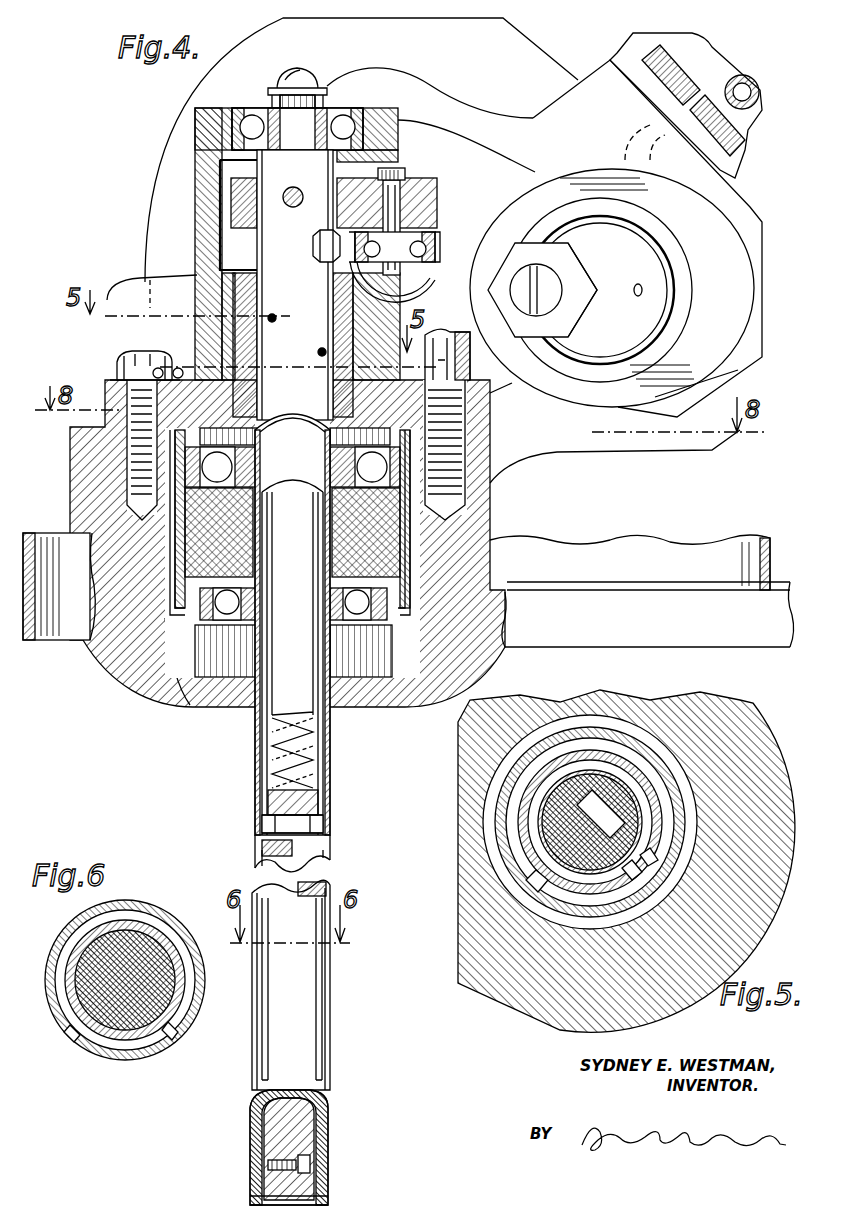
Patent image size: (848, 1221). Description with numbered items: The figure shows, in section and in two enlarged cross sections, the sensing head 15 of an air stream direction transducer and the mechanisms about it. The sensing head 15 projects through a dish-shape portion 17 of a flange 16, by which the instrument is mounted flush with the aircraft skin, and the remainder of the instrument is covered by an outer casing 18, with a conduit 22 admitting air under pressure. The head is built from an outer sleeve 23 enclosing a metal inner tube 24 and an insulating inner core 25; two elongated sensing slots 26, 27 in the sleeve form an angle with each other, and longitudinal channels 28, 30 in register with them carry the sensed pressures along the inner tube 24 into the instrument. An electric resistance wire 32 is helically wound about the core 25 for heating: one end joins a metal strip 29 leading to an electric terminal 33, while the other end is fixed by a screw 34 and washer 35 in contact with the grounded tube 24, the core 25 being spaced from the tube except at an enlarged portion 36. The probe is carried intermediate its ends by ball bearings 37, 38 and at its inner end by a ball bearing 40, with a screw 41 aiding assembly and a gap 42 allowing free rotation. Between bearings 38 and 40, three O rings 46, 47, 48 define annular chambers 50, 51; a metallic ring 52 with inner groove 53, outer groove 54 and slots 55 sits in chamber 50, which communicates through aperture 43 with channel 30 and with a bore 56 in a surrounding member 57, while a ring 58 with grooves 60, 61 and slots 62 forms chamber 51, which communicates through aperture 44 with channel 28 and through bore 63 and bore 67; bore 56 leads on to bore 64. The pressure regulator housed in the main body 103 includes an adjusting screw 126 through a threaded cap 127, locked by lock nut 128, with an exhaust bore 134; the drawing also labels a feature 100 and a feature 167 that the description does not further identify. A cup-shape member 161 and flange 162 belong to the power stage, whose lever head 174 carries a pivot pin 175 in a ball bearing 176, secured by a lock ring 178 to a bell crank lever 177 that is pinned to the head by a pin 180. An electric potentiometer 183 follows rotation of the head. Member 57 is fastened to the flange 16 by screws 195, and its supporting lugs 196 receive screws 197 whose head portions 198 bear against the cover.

In FIG. 4, the sensing head 15 is at (233, 762).
In FIG. 4, the flange 16 is at (585, 597).
In FIG. 4, the dish-shape portion 17 is at (400, 705).
In FIG. 4, the outer casing 18 is at (688, 556).
In FIG. 4, the conduit 22 is at (738, 78).
In FIG. 4, the outer sleeve 23 is at (330, 976).
In FIG. 5, the outer sleeve 23 is at (625, 762).
In FIG. 6, the outer sleeve 23 is at (175, 940).
In FIG. 4, the inner tube 24 is at (330, 1098).
In FIG. 5, the inner tube 24 is at (530, 838).
In FIG. 6, the inner tube 24 is at (110, 1055).
In FIG. 4, the inner core 25 is at (314, 1134).
In FIG. 5, the inner core 25 is at (540, 826).
In FIG. 6, the inner core 25 is at (135, 936).
In FIG. 4, the sensing slot 26 is at (262, 1048).
In FIG. 6, the sensing slot 26 is at (75, 1042).
In FIG. 4, the sensing slot 27 is at (322, 1022).
In FIG. 6, the sensing slot 27 is at (178, 1040).
In FIG. 4, the longitudinal channel 28 is at (270, 464).
In FIG. 5, the longitudinal channel 28 is at (545, 856).
In FIG. 6, the longitudinal channel 28 is at (66, 1036).
In FIG. 4, the metal strip 29 is at (318, 664).
In FIG. 5, the metal strip 29 is at (588, 910).
In FIG. 4, the longitudinal channel 30 is at (312, 436).
In FIG. 5, the longitudinal channel 30 is at (650, 872).
In FIG. 6, the longitudinal channel 30 is at (185, 1028).
In FIG. 4, the electric resistance wire 32 is at (322, 742).
In FIG. 5, the electric resistance wire 32 is at (670, 812).
In FIG. 6, the electric resistance wire 32 is at (118, 918).
In FIG. 4, the electric terminal 33 is at (313, 246).
In FIG. 4, the screw 34 is at (322, 1156).
In FIG. 4, the washer 35 is at (312, 1168).
In FIG. 4, the enlarged portion 36 is at (250, 1200).
In FIG. 4, the ball bearing 37 is at (352, 632).
In FIG. 4, the ball bearing 38 is at (376, 448).
In FIG. 4, the ball bearing 40 is at (350, 104).
In FIG. 4, the screw 41 is at (305, 80).
In FIG. 4, the gap 42 is at (313, 712).
In FIG. 4, the aperture 43 is at (318, 386).
In FIG. 5, the aperture 43 is at (650, 872).
In FIG. 4, the aperture 44 is at (280, 222).
In FIG. 5, the aperture 44 is at (545, 885).
In FIG. 4, the O ring 46 is at (352, 402).
In FIG. 4, the O ring 47 is at (355, 346).
In FIG. 4, the O ring 48 is at (262, 262).
In FIG. 4, the annular chamber 50 is at (322, 355).
In FIG. 5, the annular chamber 50 is at (699, 771).
In FIG. 4, the annular chamber 51 is at (333, 316).
In FIG. 5, the annular chamber 51 is at (524, 726).
In FIG. 4, the annular metallic ring 52 is at (350, 368).
In FIG. 5, the annular metallic ring 52 is at (665, 840).
In FIG. 4, the inner annular groove 53 is at (264, 382).
In FIG. 5, the inner annular groove 53 is at (655, 845).
In FIG. 4, the outer groove 54 is at (236, 350).
In FIG. 5, the outer groove 54 is at (634, 930).
In FIG. 4, the slot 55 is at (310, 384).
In FIG. 5, the slot 55 is at (645, 888).
In FIG. 4, the bore 56 is at (182, 355).
In FIG. 5, the bore 56 is at (478, 735).
In FIG. 4, the member 57 is at (197, 234).
In FIG. 5, the member 57 is at (690, 704).
In FIG. 4, the annular metallic ring 58 is at (335, 312).
In FIG. 5, the annular metallic ring 58 is at (553, 730).
In FIG. 4, the outer groove 60 is at (222, 270).
In FIG. 5, the outer groove 60 is at (558, 915).
In FIG. 4, the inner groove 61 is at (298, 322).
In FIG. 5, the inner groove 61 is at (576, 905).
In FIG. 4, the slot 62 is at (272, 312).
In FIG. 5, the slot 62 is at (540, 875).
In FIG. 4, the bore 63 is at (197, 272).
In FIG. 5, the bore 63 is at (460, 775).
In FIG. 4, the bore 64 is at (142, 340).
In FIG. 4, the bore 67 is at (150, 273).
In FIG. 4, the hidden passage 100 is at (650, 130).
In FIG. 4, the main body 103 is at (726, 222).
In FIG. 4, the threaded portion 126 is at (434, 270).
In FIG. 4, the threaded cap 127 is at (603, 345).
In FIG. 4, the lock nut 128 is at (542, 320).
In FIG. 4, the bore 134 is at (645, 290).
In FIG. 4, the cup-shape member 161 is at (426, 296).
In FIG. 4, the flange 162 is at (428, 284).
In FIG. 4, the hex nut 167 is at (515, 270).
In FIG. 4, the head 174 is at (432, 254).
In FIG. 4, the pivot pin 175 is at (400, 195).
In FIG. 4, the ball bearing 176 is at (430, 238).
In FIG. 4, the bell crank lever 177 is at (420, 186).
In FIG. 4, the lock ring 178 is at (404, 172).
In FIG. 4, the pin 180 is at (300, 178).
In FIG. 4, the electric potentiometer 183 is at (177, 546).
In FIG. 4, the screw 195 is at (117, 372).
In FIG. 4, the supporting lug 196 is at (470, 398).
In FIG. 4, the screw 197 is at (462, 480).
In FIG. 4, the head portion 198 is at (447, 354).